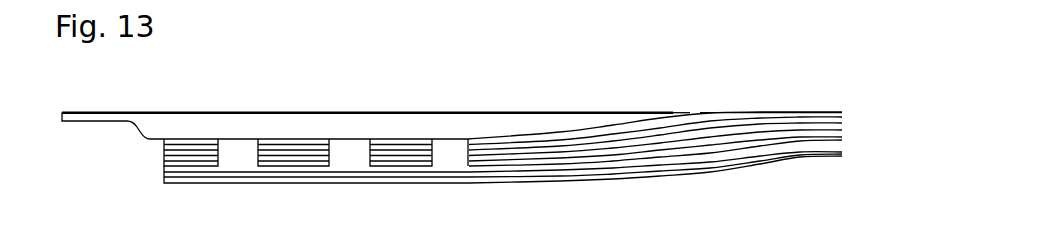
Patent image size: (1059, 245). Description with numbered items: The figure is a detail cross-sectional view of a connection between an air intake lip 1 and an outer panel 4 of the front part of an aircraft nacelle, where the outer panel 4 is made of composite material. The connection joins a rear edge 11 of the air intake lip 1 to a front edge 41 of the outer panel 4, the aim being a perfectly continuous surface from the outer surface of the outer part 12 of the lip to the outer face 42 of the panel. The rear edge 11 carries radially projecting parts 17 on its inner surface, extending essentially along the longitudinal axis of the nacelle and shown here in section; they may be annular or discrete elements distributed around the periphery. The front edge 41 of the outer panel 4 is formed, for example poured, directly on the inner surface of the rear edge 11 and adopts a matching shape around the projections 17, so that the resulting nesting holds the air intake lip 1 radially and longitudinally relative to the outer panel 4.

The air intake lip 1 is at (84, 117).
The rear edge 11 is at (401, 123).
The outer part 12 is at (227, 115).
The radially projecting parts 17 is at (238, 157).
The front edge 41 is at (510, 165).
The outer face 42 is at (735, 112).
The outer panel 4 is at (785, 120).